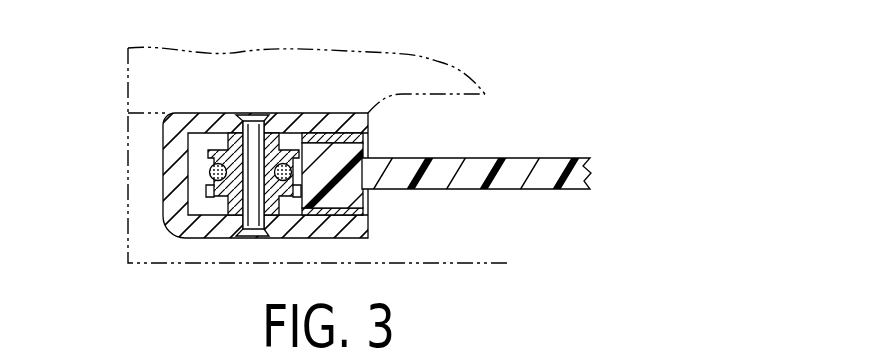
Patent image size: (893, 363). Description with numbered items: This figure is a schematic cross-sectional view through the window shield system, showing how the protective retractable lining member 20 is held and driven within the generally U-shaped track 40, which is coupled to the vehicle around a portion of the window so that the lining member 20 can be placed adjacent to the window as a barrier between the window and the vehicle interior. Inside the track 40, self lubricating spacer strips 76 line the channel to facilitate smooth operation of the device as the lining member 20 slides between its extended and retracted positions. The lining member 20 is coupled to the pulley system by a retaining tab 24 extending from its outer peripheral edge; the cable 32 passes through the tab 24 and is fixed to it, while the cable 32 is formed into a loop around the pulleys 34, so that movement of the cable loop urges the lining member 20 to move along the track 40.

The lining member 20 is at (522, 170).
The retaining tab 24 is at (317, 145).
The cable 32 is at (208, 170).
The pulley 34 is at (208, 189).
The U-shaped track 40 is at (190, 122).
The self lubricating spacer strip 76 is at (367, 140).